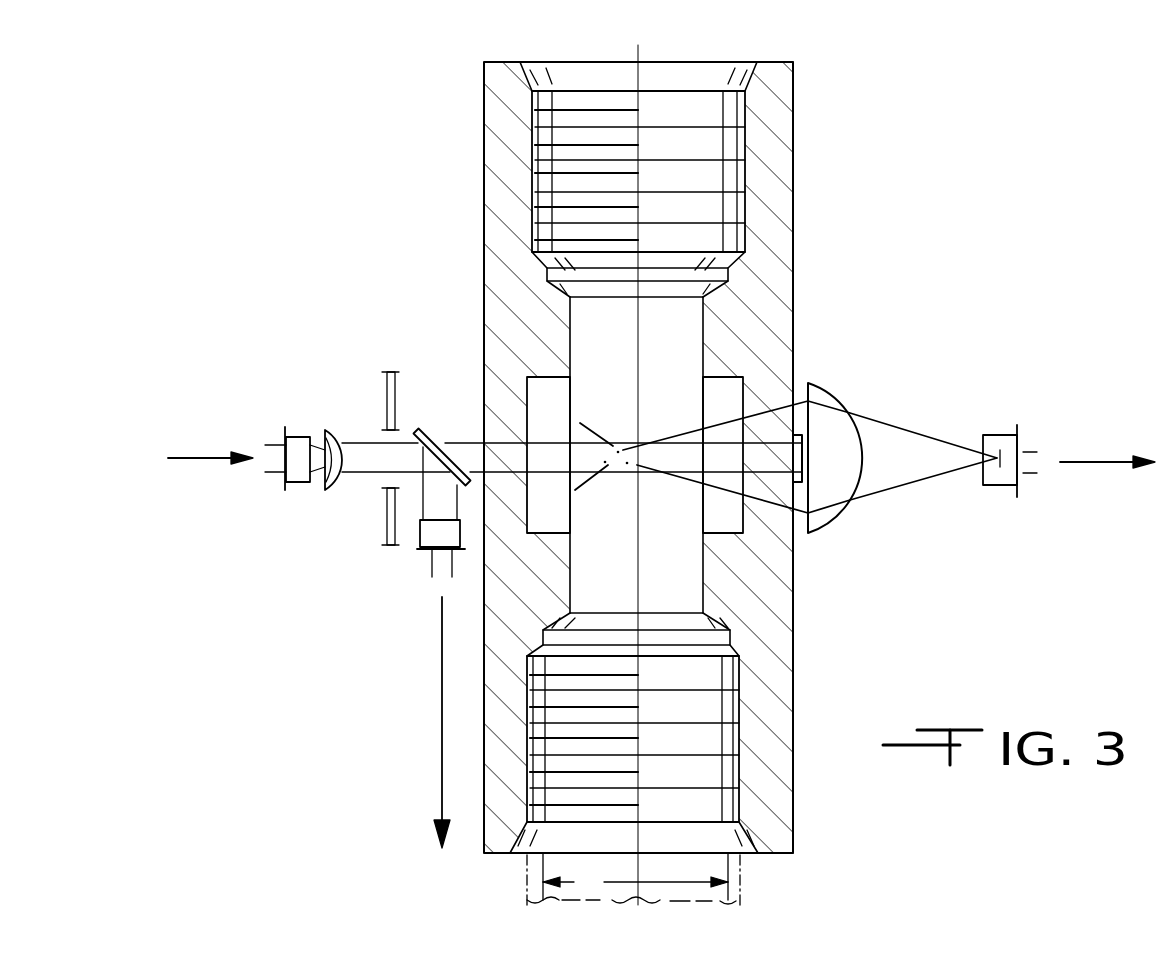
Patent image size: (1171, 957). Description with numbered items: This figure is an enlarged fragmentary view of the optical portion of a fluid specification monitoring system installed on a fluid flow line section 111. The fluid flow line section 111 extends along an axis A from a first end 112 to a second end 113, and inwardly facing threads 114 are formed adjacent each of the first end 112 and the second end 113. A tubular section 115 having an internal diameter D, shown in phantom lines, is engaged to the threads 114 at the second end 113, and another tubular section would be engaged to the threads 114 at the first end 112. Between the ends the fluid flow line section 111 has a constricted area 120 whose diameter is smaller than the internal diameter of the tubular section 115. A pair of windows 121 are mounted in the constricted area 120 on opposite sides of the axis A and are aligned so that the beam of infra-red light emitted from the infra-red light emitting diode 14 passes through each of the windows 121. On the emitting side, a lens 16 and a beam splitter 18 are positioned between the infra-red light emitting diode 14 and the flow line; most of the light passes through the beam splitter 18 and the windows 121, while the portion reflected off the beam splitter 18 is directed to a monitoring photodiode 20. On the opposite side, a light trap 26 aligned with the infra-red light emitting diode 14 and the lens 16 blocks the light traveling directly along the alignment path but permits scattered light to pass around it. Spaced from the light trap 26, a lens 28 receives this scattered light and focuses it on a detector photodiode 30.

The axis A is at (638, 48).
The infra-red light emitting diode 14 is at (297, 437).
The lens 16 is at (340, 428).
The beam splitter 18 is at (438, 430).
The monitoring photodiode 20 is at (420, 537).
The light trap 26 is at (795, 462).
The lens 28 is at (826, 386).
The detector photodiode 30 is at (997, 435).
The fluid flow line section 111 is at (493, 252).
The first end 112 is at (772, 63).
The second end 113 is at (768, 856).
The inwardly facing threads 114 is at (538, 152).
The tubular section 115 is at (740, 896).
The constricted area 120 is at (573, 570).
The windows 121 is at (540, 398).